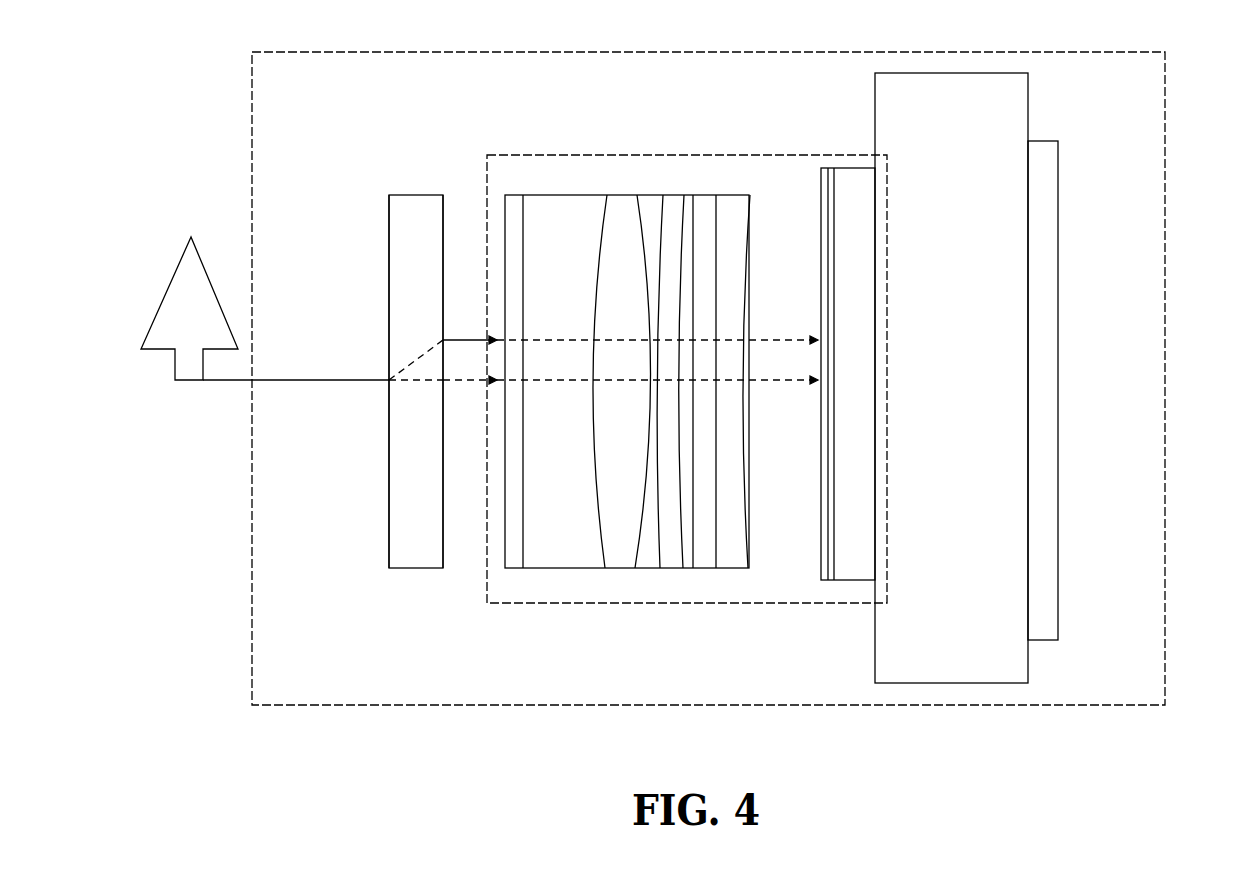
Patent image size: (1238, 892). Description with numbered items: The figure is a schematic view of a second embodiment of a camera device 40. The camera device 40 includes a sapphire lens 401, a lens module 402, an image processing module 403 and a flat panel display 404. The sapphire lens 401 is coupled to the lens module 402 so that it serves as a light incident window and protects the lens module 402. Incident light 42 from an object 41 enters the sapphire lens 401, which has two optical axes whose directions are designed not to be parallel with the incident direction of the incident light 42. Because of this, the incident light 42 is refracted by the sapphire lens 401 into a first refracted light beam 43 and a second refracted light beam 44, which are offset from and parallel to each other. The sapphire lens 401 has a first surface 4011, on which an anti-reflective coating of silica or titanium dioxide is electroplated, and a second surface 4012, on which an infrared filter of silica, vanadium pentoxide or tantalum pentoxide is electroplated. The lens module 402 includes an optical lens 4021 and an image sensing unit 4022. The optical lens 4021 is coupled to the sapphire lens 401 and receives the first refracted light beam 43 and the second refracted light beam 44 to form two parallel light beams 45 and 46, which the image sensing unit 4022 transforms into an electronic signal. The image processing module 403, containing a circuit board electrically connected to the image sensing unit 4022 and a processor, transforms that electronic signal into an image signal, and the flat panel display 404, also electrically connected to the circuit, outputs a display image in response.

The camera device 40 is at (1165, 548).
The object 41 is at (173, 277).
The incident light 42 is at (322, 382).
The first refracted light beam 43 is at (448, 339).
The second refracted light beam 44 is at (452, 382).
The parallel light beam 45 is at (767, 340).
The parallel light beam 46 is at (768, 382).
The sapphire lens 401 is at (410, 568).
The lens module 402 is at (610, 605).
The image processing module 403 is at (875, 133).
The flat panel display 404 is at (1058, 381).
The first surface 4011 is at (389, 245).
The second surface 4012 is at (445, 219).
The optical lens 4021 is at (568, 195).
The image sensing unit 4022 is at (853, 580).